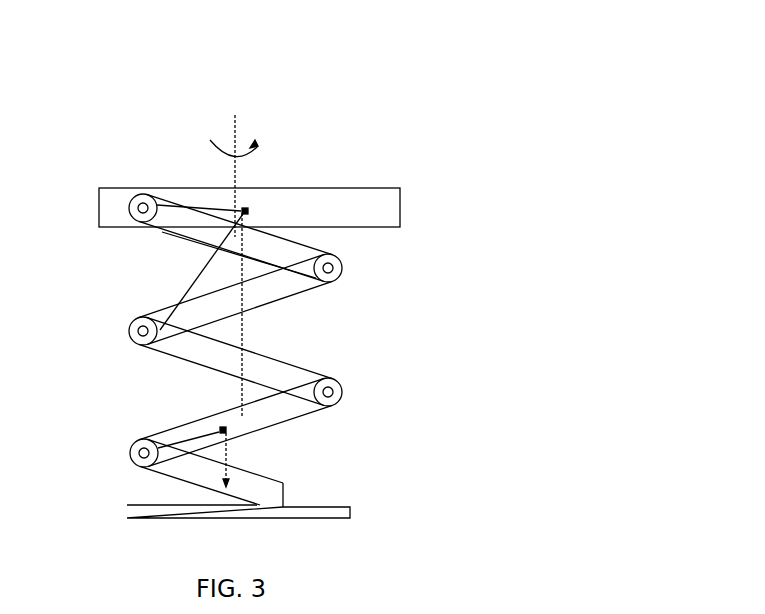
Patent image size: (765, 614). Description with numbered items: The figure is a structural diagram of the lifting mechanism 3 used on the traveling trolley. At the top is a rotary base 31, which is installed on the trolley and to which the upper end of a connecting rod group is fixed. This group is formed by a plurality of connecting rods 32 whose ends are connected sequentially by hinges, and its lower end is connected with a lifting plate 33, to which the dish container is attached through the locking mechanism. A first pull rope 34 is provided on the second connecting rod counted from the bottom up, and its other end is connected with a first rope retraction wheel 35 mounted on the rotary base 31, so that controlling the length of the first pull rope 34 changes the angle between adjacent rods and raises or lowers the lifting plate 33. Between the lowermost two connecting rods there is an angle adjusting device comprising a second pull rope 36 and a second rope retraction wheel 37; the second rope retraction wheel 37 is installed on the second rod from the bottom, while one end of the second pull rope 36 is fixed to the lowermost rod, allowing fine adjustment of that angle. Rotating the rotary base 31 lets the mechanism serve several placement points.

The lifting mechanism 3 is at (303, 120).
The rotary base 31 is at (367, 210).
The connecting rods 32 is at (290, 368).
The lifting plate 33 is at (340, 507).
The first pull rope 34 is at (250, 266).
The first rope retraction wheel 35 is at (243, 212).
The second pull rope 36 is at (135, 451).
The second rope retraction wheel 37 is at (221, 429).